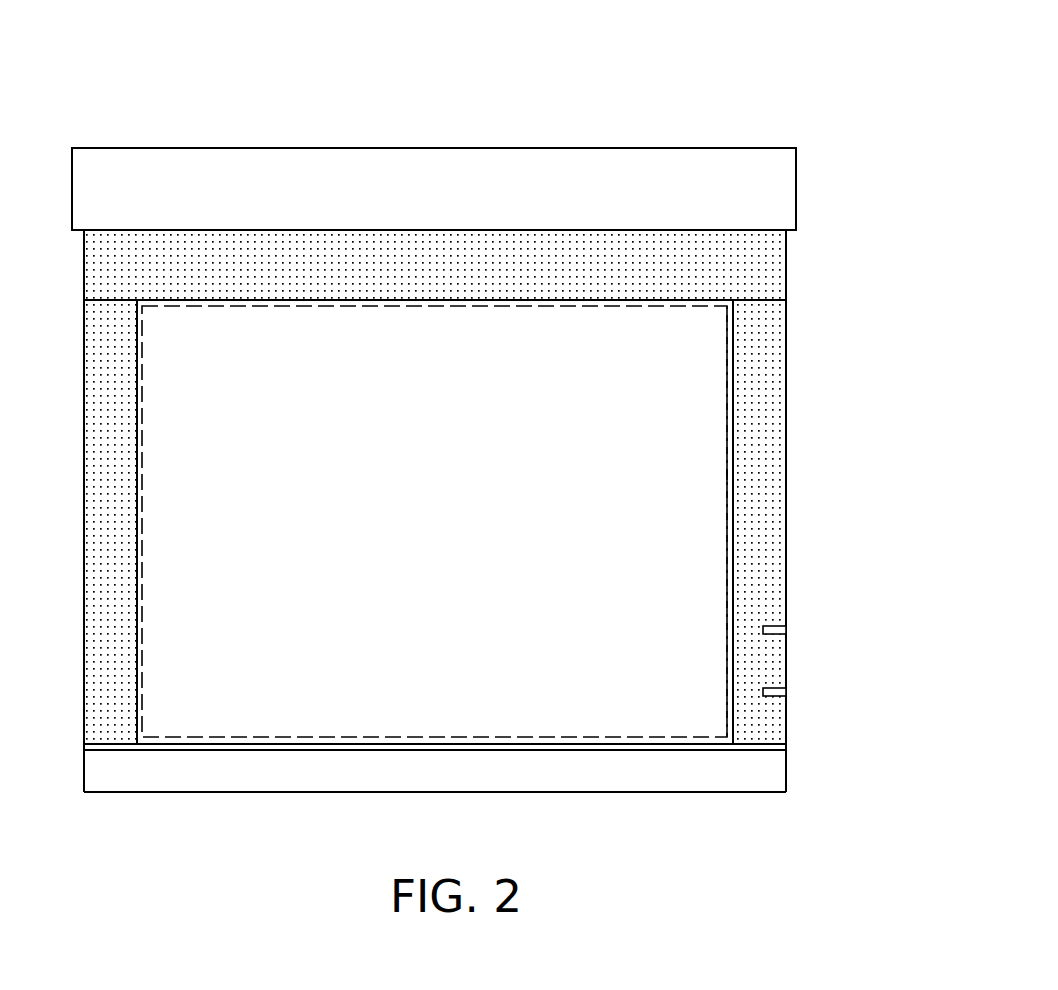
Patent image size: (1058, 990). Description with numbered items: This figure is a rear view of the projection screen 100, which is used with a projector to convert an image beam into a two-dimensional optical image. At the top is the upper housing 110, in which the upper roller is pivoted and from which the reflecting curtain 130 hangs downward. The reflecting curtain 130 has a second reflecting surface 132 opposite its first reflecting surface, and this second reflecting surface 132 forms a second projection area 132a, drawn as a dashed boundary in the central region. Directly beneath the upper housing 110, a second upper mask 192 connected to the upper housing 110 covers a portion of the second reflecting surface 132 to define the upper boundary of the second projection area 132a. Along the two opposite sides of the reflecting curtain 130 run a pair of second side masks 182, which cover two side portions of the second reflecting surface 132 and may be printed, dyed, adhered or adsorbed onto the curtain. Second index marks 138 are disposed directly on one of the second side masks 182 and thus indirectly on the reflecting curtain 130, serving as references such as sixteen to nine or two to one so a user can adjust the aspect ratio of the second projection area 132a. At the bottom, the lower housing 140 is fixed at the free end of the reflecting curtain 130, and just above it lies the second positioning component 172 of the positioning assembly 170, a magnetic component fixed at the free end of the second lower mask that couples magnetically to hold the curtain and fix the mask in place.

The projection screen 100 is at (795, 128).
The upper housing 110 is at (771, 186).
The second upper mask 192 is at (769, 270).
The reflecting curtain 130 is at (717, 356).
The second reflecting surface 132 is at (717, 424).
The second projection area 132a is at (745, 476).
The second side masks 182 is at (103, 570).
The second index mark 138 is at (780, 630).
The second positioning component 172 is at (776, 747).
The positioning assembly 170 is at (493, 732).
The lower housing 140 is at (768, 770).